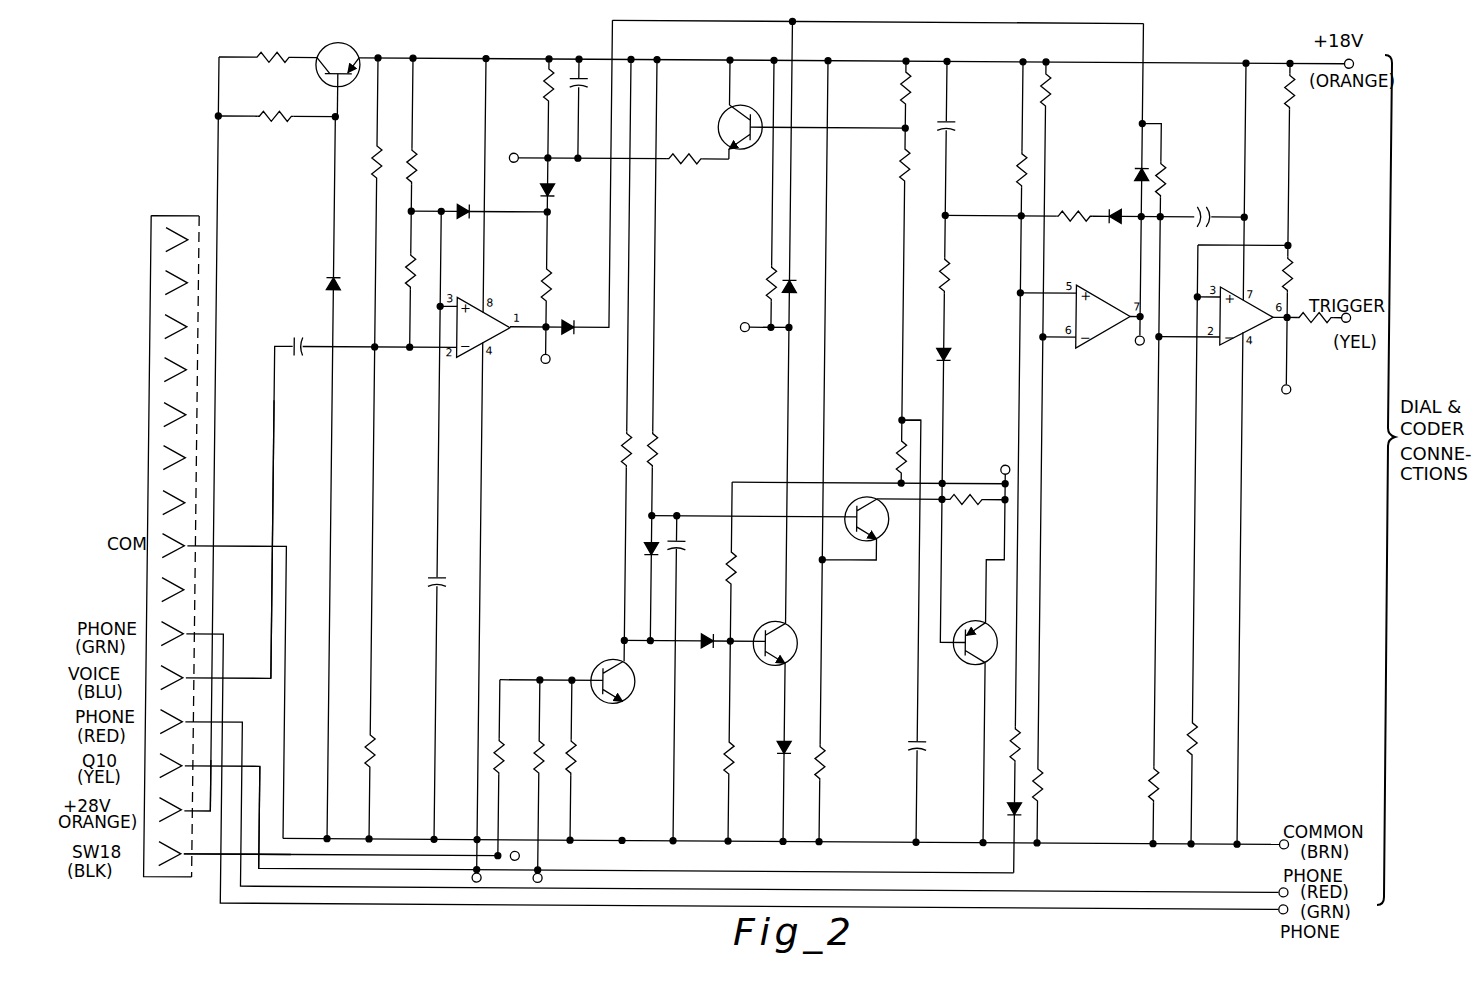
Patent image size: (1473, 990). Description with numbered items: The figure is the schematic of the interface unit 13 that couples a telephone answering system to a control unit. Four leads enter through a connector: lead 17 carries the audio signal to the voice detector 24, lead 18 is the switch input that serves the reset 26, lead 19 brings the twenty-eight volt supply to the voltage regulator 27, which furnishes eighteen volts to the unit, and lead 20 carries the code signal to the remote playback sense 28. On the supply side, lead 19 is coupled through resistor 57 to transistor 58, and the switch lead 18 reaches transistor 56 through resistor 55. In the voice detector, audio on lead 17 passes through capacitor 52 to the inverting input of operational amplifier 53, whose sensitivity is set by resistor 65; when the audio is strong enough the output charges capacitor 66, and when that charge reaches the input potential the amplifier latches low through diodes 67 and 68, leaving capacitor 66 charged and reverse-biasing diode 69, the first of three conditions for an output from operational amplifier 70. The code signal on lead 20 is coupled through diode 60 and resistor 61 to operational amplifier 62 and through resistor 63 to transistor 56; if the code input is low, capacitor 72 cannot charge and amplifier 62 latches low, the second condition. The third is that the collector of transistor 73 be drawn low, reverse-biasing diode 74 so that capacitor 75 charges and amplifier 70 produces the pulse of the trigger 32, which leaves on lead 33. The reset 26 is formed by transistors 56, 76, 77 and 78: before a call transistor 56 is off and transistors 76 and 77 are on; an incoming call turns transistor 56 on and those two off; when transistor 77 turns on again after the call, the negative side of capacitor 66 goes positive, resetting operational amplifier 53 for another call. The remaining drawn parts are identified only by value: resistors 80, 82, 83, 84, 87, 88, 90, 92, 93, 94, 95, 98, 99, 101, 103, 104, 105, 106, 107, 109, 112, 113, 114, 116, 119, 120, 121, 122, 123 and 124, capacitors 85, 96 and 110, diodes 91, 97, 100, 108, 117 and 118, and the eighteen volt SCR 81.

The interface unit 13 is at (190, 42).
The lead 17 is at (278, 666).
The lead 18 is at (214, 856).
The lead 19 is at (222, 800).
The lead 20 is at (270, 764).
The voice detector 24 is at (568, 46).
The reset circuit 26 is at (720, 58).
The voltage regulator 27 is at (348, 40).
The remote playback sense 28 is at (1068, 56).
The trigger 32 is at (1234, 50).
The lead 33 is at (1346, 320).
The capacitor 52 is at (293, 340).
The operational amplifier 53 is at (520, 286).
The resistor 55 is at (504, 738).
The transistor 56 is at (606, 664).
The resistor 57 is at (149, 230).
The transistor 58 is at (323, 84).
The diode 60 is at (1014, 800).
The resistor 61 is at (1023, 728).
The operational amplifier 62 is at (1104, 258).
The resistor 63 is at (538, 734).
The resistor 65 is at (402, 264).
The capacitor 66 is at (577, 86).
The diode 67 is at (556, 192).
The diode 68 is at (462, 204).
The diode 69 is at (570, 330).
The operational amplifier 70 is at (1228, 340).
The capacitor 72 is at (950, 114).
The transistor 73 is at (768, 618).
The diode 74 is at (778, 306).
The capacitor 75 is at (1218, 180).
The transistor 76 is at (884, 538).
The transistor 77 is at (975, 592).
The transistor 78 is at (728, 112).
The resistor 80 is at (288, 122).
The SCR 81 is at (328, 282).
The resistor 82 is at (410, 738).
The resistor 83 is at (376, 148).
The resistor 84 is at (414, 152).
The capacitor 85 is at (438, 580).
The resistor 87 is at (555, 278).
The resistor 88 is at (546, 90).
The resistor 90 is at (620, 466).
The diode 91 is at (648, 556).
The resistor 92 is at (660, 456).
The resistor 93 is at (698, 128).
The resistor 94 is at (772, 266).
The resistor 95 is at (580, 758).
The capacitor 96 is at (686, 548).
The diode 97 is at (710, 640).
The resistor 98 is at (726, 758).
The resistor 99 is at (734, 556).
The diode 100 is at (784, 754).
The resistor 101 is at (828, 749).
The resistor 103 is at (874, 434).
The resistor 104 is at (900, 74).
The resistor 105 is at (902, 172).
The resistor 106 is at (896, 462).
The resistor 107 is at (947, 268).
The diode 108 is at (952, 346).
The resistor 109 is at (982, 502).
The capacitor 110 is at (914, 752).
The resistor 112 is at (1018, 164).
The resistor 113 is at (1048, 92).
The resistor 114 is at (1086, 782).
The resistor 116 is at (1066, 208).
The diode 117 is at (1116, 208).
The diode 118 is at (1138, 170).
The resistor 119 is at (1162, 164).
The resistor 120 is at (1154, 764).
The resistor 121 is at (1222, 692).
The resistor 122 is at (1292, 102).
The resistor 123 is at (1290, 256).
The resistor 124 is at (1308, 318).